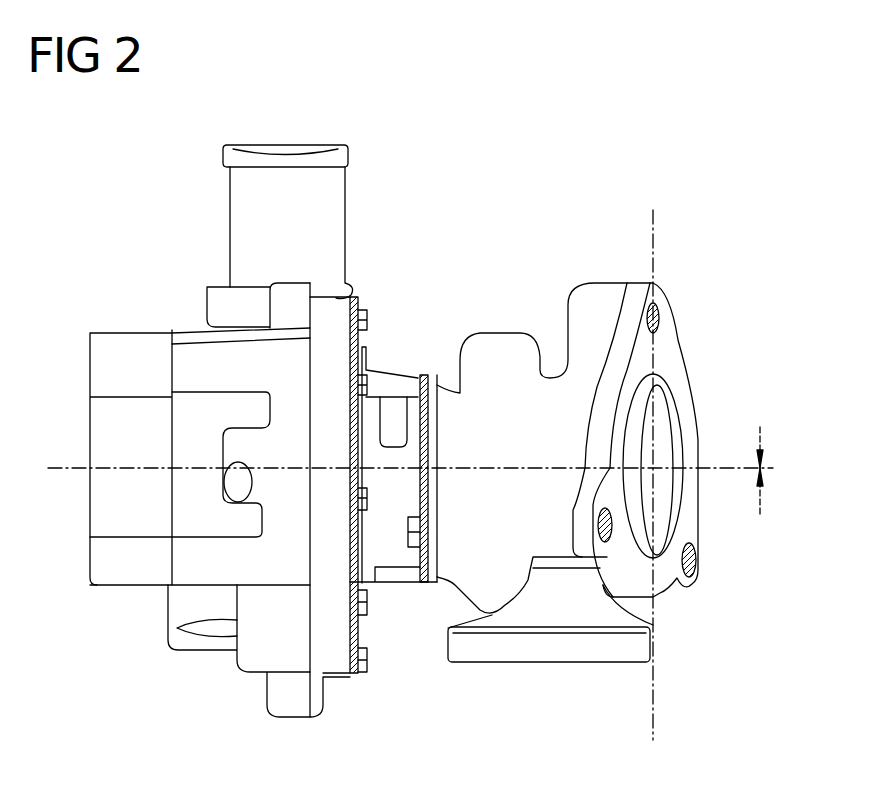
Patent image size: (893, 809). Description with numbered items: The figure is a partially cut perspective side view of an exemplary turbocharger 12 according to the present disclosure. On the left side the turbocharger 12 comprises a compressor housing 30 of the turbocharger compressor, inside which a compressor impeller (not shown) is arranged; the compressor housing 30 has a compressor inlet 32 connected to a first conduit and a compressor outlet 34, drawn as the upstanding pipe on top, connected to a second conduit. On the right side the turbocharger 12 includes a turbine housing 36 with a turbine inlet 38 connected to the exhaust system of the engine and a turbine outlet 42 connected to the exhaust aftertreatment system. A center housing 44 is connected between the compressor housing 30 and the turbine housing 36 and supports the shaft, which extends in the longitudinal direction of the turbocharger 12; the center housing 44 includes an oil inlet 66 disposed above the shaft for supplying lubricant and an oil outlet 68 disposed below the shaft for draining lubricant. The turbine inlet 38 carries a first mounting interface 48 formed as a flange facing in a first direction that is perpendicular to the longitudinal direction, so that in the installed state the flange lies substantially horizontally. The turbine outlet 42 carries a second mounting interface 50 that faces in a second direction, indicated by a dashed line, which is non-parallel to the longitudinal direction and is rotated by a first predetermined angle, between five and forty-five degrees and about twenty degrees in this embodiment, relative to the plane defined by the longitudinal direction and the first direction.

The turbocharger 12 is at (548, 192).
The compressor housing 30 is at (131, 590).
The compressor inlet 32 is at (90, 512).
The compressor outlet 34 is at (288, 143).
The turbine housing 36 is at (502, 330).
The turbine inlet 38 is at (503, 668).
The turbine outlet 42 is at (716, 352).
The center housing 44 is at (397, 335).
The first mounting interface 48 is at (447, 640).
The second mounting interface 50 is at (697, 583).
The oil inlet 66 is at (393, 448).
The oil outlet 68 is at (401, 580).